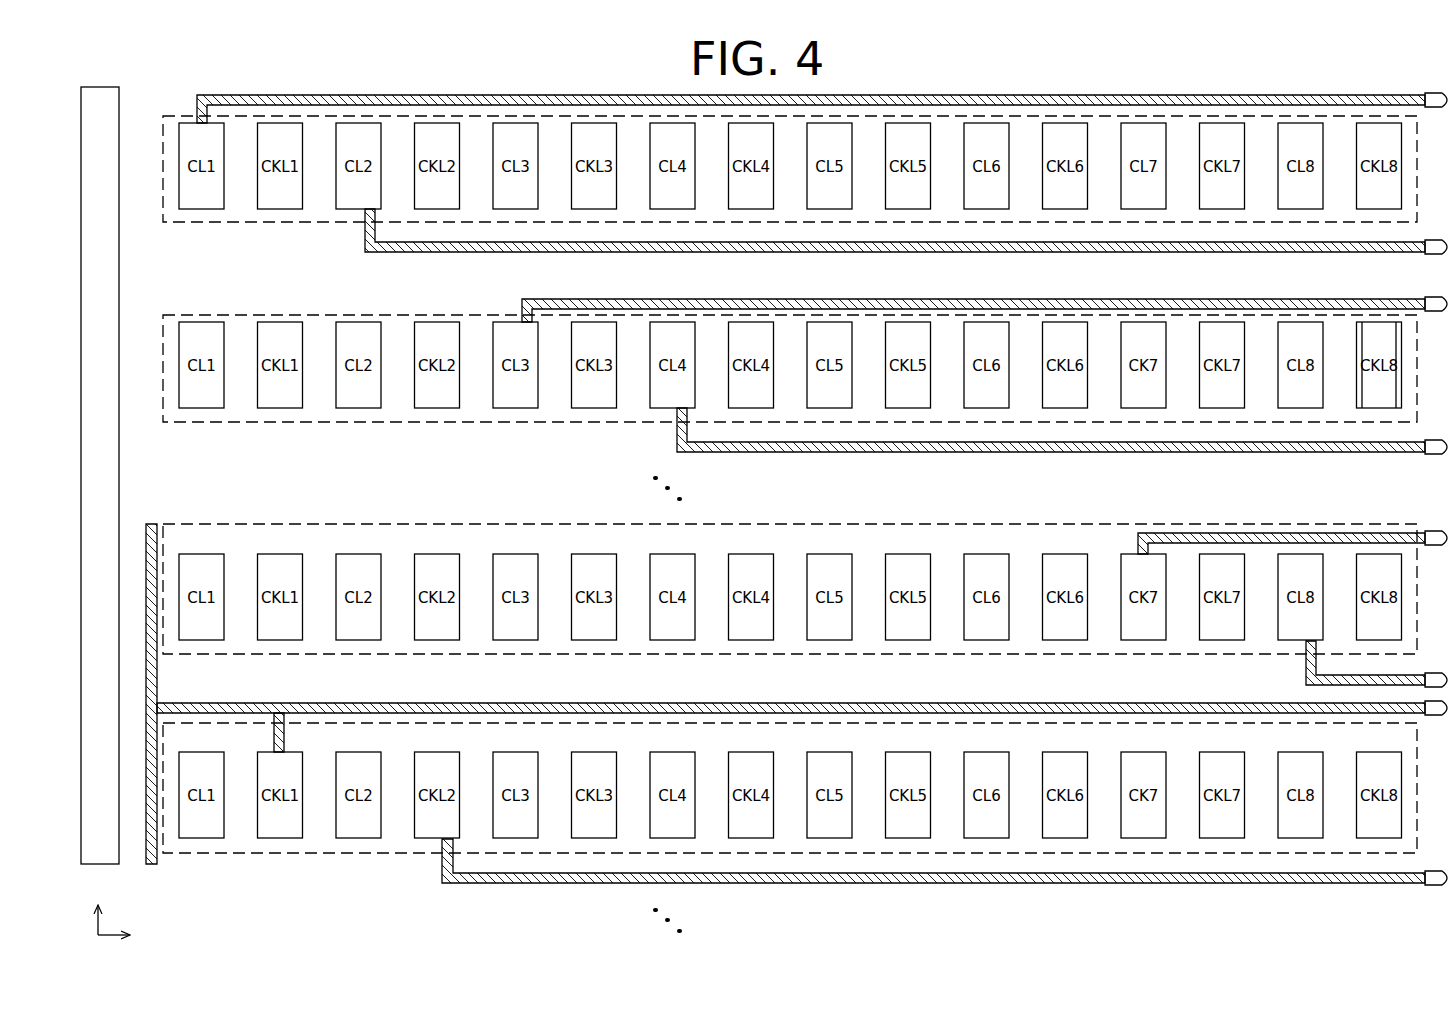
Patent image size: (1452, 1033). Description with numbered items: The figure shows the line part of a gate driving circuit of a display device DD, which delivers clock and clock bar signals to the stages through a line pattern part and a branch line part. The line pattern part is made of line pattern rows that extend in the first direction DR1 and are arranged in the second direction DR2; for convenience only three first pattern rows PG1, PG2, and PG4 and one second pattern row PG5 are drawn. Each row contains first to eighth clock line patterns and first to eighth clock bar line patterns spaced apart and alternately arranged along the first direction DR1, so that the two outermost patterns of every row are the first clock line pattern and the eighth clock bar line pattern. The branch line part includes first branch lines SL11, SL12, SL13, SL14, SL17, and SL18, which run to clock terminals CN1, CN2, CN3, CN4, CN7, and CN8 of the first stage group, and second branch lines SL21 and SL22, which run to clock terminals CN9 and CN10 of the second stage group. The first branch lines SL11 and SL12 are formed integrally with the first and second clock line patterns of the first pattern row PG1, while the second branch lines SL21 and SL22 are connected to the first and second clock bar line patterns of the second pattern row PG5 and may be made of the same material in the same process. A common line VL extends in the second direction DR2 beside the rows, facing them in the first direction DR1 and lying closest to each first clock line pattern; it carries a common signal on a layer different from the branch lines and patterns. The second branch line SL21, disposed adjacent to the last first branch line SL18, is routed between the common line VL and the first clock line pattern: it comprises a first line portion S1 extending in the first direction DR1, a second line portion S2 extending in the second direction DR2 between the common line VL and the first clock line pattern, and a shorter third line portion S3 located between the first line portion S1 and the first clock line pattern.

The display device DD is at (1283, 84).
The common line VL is at (100, 87).
The first pattern row PG1 is at (190, 116).
The first pattern row PG2 is at (190, 315).
The first pattern row PG4 is at (190, 524).
The second pattern row PG5 is at (205, 853).
The first branch line SL11 is at (322, 95).
The first branch line SL12 is at (365, 242).
The first branch line SL13 is at (625, 299).
The first branch line SL14 is at (773, 452).
The first branch line SL17 is at (1270, 533).
The first branch line SL18 is at (1306, 670).
The second branch line SL21 is at (785, 694).
The second branch line SL22 is at (442, 878).
The first line portion S1 is at (327, 703).
The second line portion S2 is at (157, 664).
The third line portion S3 is at (286, 720).
The clock terminal CN1 is at (1437, 93).
The clock terminal CN2 is at (1437, 240).
The clock terminal CN3 is at (1437, 311).
The clock terminal CN4 is at (1437, 440).
The clock terminal CN7 is at (1437, 531).
The clock terminal CN8 is at (1437, 673).
The clock terminal CN9 is at (1437, 717).
The clock terminal CN10 is at (1437, 887).
The first direction DR1 is at (139, 936).
The second direction DR2 is at (102, 905).